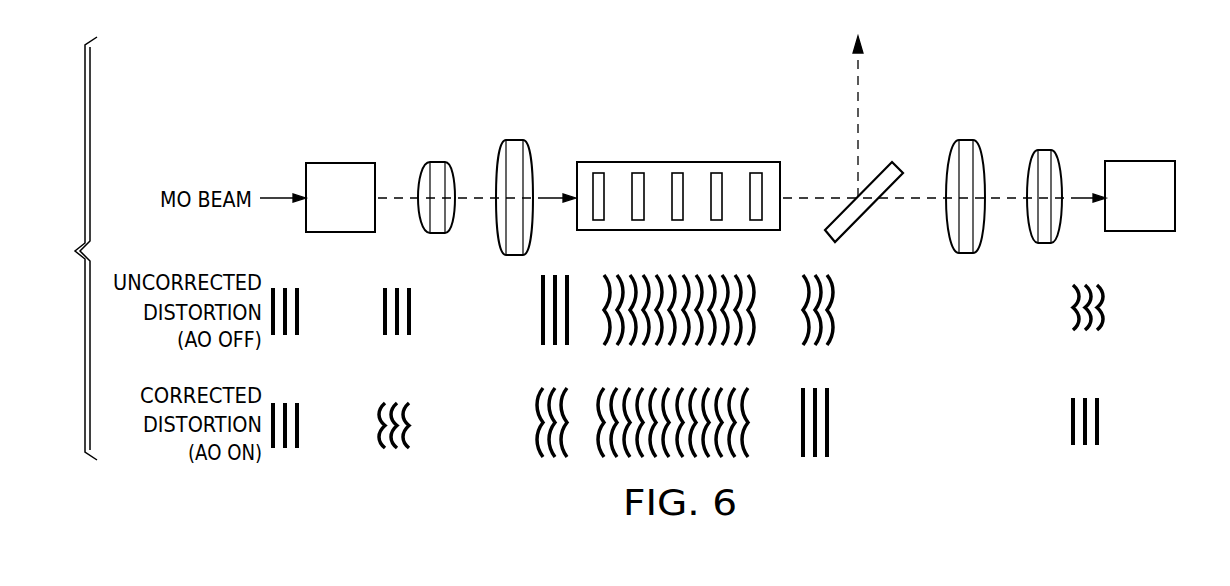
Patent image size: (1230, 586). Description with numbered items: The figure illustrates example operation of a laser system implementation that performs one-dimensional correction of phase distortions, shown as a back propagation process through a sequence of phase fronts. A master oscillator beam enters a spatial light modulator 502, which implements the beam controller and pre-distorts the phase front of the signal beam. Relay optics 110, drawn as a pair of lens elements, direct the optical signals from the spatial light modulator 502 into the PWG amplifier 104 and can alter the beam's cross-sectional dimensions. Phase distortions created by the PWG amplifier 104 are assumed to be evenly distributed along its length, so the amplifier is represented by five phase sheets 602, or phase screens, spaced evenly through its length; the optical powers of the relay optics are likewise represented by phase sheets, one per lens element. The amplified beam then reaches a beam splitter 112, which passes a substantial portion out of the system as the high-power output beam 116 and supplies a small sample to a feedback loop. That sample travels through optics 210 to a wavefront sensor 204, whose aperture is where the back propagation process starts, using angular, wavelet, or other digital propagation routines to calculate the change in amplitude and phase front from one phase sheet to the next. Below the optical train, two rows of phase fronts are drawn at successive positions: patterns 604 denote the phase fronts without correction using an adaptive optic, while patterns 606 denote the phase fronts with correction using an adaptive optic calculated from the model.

The spatial light modulator 502 is at (340, 163).
The relay optics 110 is at (532, 134).
The phase sheets 602 is at (638, 173).
The PWG amplifier 104 is at (678, 168).
The high-power output beam 116 is at (856, 112).
The beam splitter 112 is at (868, 210).
The optics 210 is at (1060, 135).
The wavefront sensor 204 is at (1140, 161).
The patterns 604 is at (1118, 313).
The patterns 606 is at (1118, 425).